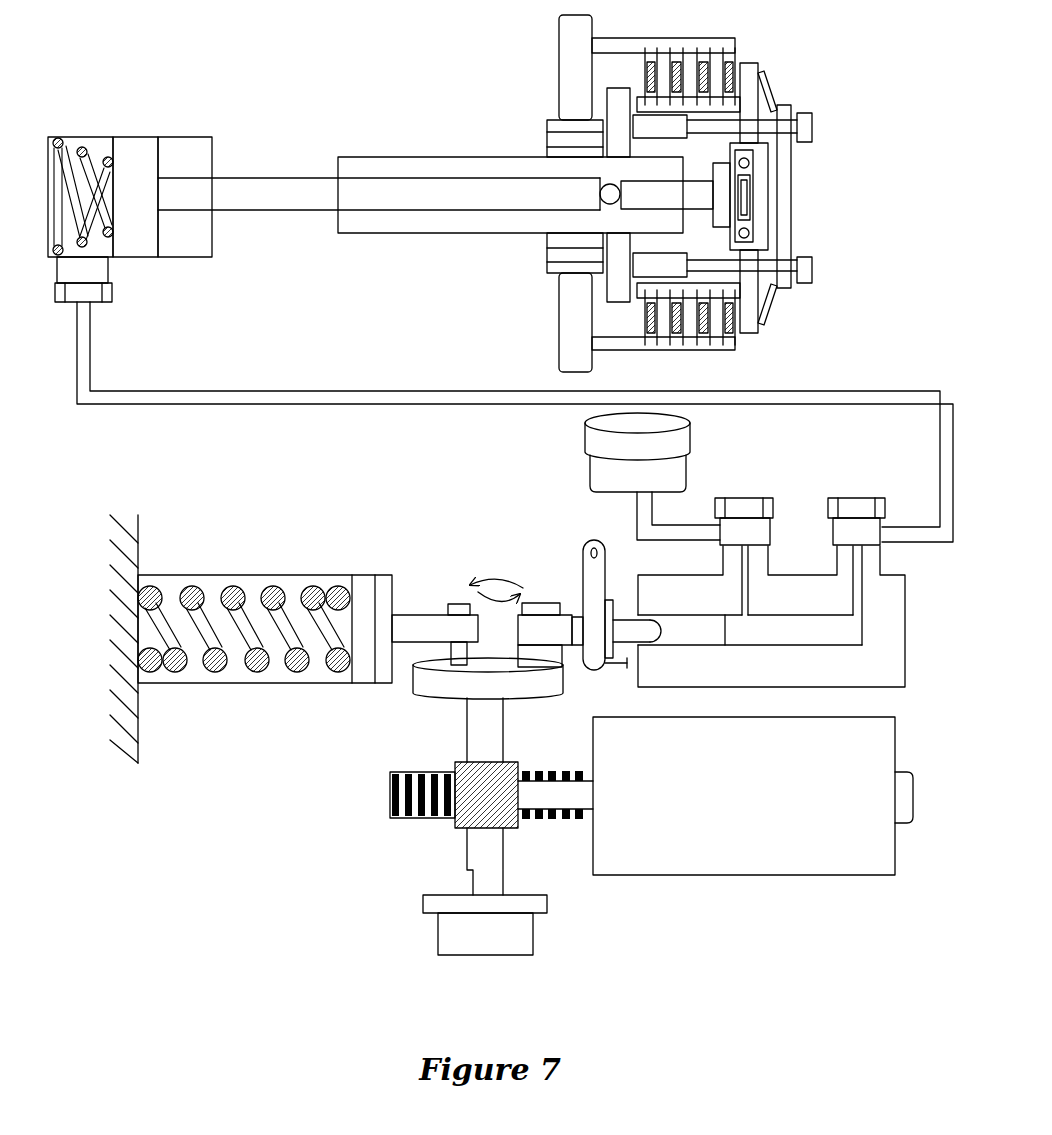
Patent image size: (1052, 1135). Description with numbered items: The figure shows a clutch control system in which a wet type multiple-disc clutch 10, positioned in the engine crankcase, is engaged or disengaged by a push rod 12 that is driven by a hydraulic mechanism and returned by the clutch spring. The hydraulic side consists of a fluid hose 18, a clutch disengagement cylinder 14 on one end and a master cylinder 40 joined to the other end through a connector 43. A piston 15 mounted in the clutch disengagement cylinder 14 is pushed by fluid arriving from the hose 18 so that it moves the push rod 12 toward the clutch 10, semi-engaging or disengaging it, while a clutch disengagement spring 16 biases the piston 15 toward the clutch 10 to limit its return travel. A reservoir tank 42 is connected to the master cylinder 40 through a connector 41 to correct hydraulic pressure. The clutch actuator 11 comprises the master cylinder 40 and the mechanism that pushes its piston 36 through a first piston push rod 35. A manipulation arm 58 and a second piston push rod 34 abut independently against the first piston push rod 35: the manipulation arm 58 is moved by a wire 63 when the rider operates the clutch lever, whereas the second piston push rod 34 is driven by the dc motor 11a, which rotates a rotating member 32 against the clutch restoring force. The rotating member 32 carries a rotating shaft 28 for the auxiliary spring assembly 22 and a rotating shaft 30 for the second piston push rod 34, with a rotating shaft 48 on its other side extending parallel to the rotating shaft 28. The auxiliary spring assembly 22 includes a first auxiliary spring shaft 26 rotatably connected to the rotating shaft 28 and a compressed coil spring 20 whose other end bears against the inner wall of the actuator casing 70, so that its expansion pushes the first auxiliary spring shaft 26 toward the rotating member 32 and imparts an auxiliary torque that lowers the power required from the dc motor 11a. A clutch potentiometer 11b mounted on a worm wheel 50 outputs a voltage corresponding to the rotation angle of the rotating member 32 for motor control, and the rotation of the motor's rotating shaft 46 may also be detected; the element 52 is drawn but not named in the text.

The clutch 10 is at (850, 170).
The push rod 12 is at (270, 198).
The clutch disengagement cylinder 14 is at (183, 135).
The piston 15 is at (137, 252).
The clutch disengagement spring 16 is at (62, 157).
The fluid hose 18 is at (307, 405).
The coil spring 20 is at (188, 585).
The auxiliary spring assembly 22 is at (297, 683).
The first auxiliary spring shaft 26 is at (412, 617).
The rotating shaft 28 is at (458, 603).
The rotating shaft 30 is at (533, 603).
The rotating member 32 is at (410, 695).
The second piston push rod 34 is at (630, 580).
The first piston push rod 35 is at (643, 613).
The piston 36 is at (682, 641).
The master cylinder 40 is at (803, 616).
The connector 41 is at (741, 498).
The reservoir tank 42 is at (583, 468).
The connector 43 is at (853, 498).
The rotating shaft 46 is at (593, 796).
The rotating shaft 48 is at (503, 742).
The worm wheel 50 is at (393, 820).
The worm wheel 52 is at (515, 818).
The manipulation arm 58 is at (605, 555).
The wire 63 is at (607, 668).
The actuator casing 70 is at (138, 735).
The clutch actuator 11 is at (550, 826).
The dc motor 11a is at (745, 863).
The clutch potentiometer 11b is at (535, 935).